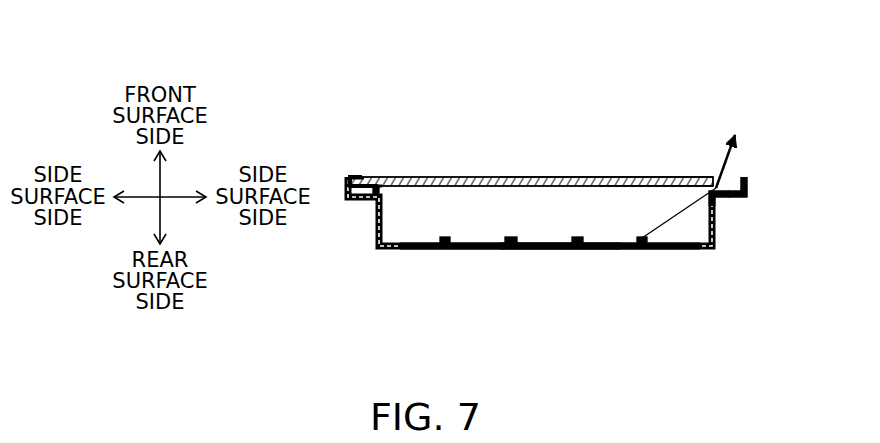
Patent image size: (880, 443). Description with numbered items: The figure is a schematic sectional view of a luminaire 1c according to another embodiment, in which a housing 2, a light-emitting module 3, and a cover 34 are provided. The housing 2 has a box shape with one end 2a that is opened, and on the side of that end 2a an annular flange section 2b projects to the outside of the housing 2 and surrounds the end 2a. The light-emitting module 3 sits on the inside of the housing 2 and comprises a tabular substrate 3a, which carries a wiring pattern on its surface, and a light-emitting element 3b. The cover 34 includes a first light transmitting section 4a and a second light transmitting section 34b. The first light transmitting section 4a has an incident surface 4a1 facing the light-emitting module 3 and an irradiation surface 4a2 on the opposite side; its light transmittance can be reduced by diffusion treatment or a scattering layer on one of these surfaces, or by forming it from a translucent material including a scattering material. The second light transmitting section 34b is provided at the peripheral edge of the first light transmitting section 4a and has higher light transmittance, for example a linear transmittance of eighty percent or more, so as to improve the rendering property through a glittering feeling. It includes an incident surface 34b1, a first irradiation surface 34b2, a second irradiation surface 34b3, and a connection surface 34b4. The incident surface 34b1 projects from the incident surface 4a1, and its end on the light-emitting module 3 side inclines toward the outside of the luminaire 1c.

The luminaire 1c is at (733, 90).
The housing 2 is at (719, 256).
The end of the housing 2a is at (741, 176).
The flange section 2b is at (747, 202).
The light-emitting module 3 is at (623, 335).
The substrate 3a is at (546, 251).
The light-emitting element 3b is at (577, 251).
The first light transmitting section 4a is at (458, 177).
The incident surface 4a1 is at (669, 189).
The irradiation surface 4a2 is at (641, 175).
The cover 34 is at (492, 70).
The second light transmitting section 34b is at (362, 177).
The incident surface 34b1 is at (383, 189).
The first irradiation surface 34b2 is at (351, 175).
The second irradiation surface 34b3 is at (346, 177).
The connection surface 34b4 is at (385, 189).